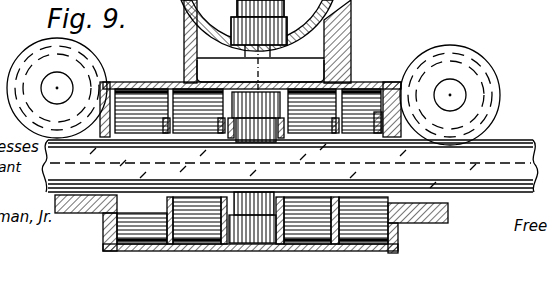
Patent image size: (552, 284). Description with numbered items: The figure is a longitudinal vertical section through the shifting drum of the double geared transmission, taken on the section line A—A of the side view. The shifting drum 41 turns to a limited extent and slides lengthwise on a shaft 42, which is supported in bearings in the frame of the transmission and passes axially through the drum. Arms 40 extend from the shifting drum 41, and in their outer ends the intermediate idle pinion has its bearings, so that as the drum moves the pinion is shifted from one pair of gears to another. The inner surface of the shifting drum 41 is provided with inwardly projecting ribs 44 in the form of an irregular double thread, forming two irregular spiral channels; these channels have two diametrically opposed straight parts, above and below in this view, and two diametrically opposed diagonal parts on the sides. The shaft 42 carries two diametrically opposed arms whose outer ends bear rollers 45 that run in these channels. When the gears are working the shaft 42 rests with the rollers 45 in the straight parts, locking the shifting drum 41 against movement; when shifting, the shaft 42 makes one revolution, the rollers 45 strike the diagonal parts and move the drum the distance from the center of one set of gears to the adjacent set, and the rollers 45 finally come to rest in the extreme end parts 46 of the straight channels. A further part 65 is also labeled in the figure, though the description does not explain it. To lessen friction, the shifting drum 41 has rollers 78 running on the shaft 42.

The rollers 78 is at (253, 91).
The shaft 42 is at (505, 193).
The arms 40 is at (264, 55).
The section line A— A is at (259, 46).
The rollers 45 is at (78, 251).
The shifting drum 41 is at (135, 62).
The inwardly projecting ribs 44 is at (368, 90).
The extreme end parts 46 is at (128, 82).
The nut 65 is at (350, 58).